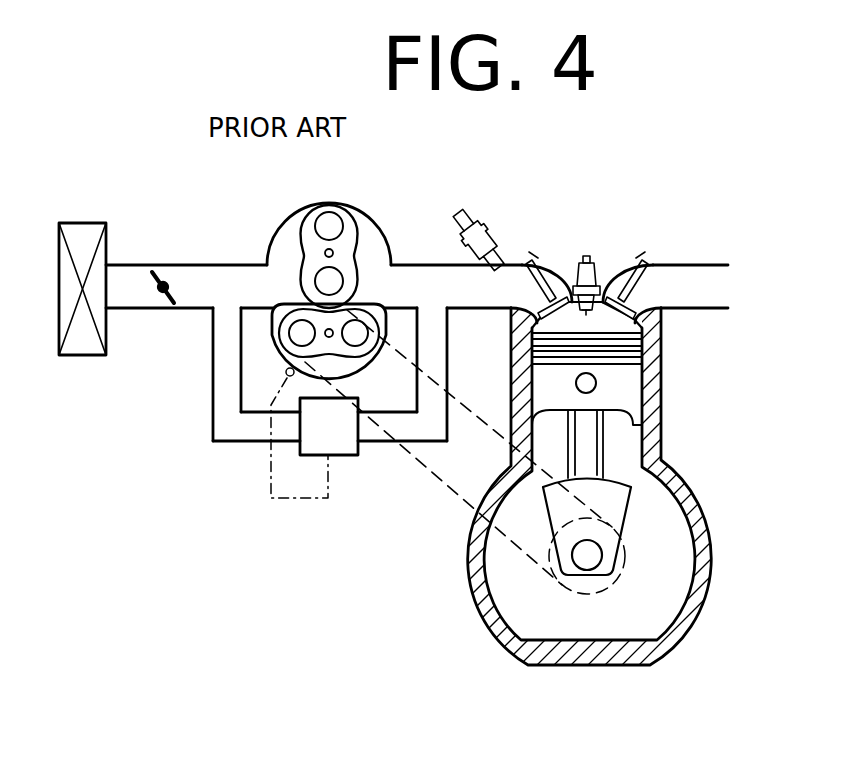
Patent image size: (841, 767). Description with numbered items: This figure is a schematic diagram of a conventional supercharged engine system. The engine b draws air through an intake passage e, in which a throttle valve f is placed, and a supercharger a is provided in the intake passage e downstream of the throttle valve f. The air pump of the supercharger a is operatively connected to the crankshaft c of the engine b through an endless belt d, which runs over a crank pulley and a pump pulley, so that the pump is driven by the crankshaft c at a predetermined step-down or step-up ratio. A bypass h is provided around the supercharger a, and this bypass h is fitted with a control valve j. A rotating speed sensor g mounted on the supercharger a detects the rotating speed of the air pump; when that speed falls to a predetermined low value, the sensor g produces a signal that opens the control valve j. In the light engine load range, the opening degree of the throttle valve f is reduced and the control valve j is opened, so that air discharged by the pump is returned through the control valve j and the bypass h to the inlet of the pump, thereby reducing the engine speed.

The supercharger a is at (287, 233).
The engine b is at (653, 443).
The crankshaft c is at (597, 562).
The endless belt d is at (458, 480).
The intake passage e is at (197, 287).
The throttle valve f is at (165, 300).
The rotating speed sensor g is at (288, 369).
The bypass h is at (243, 430).
The control valve j is at (347, 445).